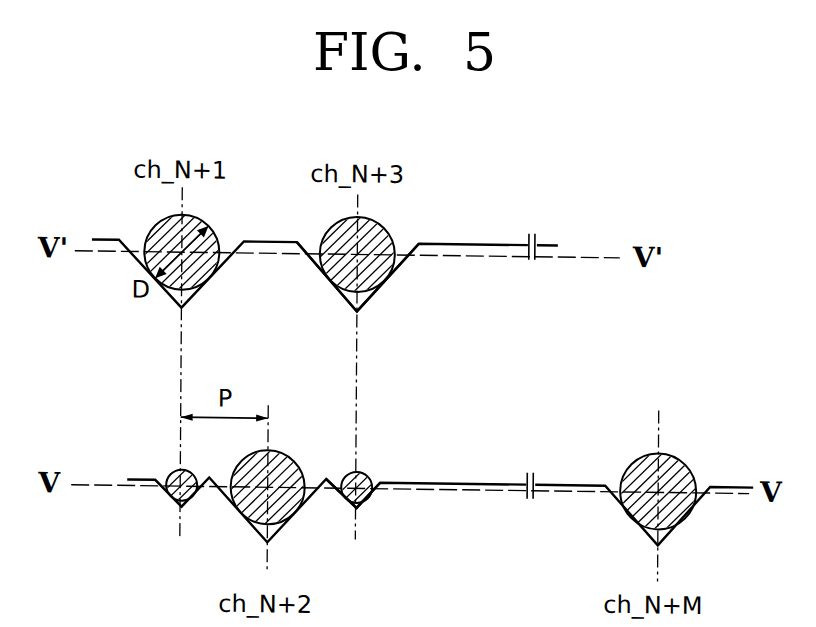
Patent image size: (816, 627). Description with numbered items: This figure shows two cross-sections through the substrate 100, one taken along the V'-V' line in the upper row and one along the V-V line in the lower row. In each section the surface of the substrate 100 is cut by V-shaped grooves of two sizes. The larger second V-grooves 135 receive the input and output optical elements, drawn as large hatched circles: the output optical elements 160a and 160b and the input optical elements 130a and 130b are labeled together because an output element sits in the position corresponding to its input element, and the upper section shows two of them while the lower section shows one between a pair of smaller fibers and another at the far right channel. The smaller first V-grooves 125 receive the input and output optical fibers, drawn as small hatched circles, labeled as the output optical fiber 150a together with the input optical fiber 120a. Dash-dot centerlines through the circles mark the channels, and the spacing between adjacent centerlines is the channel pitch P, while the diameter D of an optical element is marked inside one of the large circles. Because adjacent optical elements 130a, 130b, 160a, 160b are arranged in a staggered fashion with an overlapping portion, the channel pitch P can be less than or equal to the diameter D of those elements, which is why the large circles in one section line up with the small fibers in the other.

The substrate 100 is at (482, 242).
The second V-groove 135 is at (363, 298).
The first V-groove 125 is at (363, 506).
The output optical element 160a is at (347, 216).
The input optical element 130a is at (202, 226).
The output optical element 160b is at (324, 454).
The input optical element 130b is at (283, 458).
The output optical fiber 150a is at (329, 476).
The input optical fiber 120a is at (369, 480).